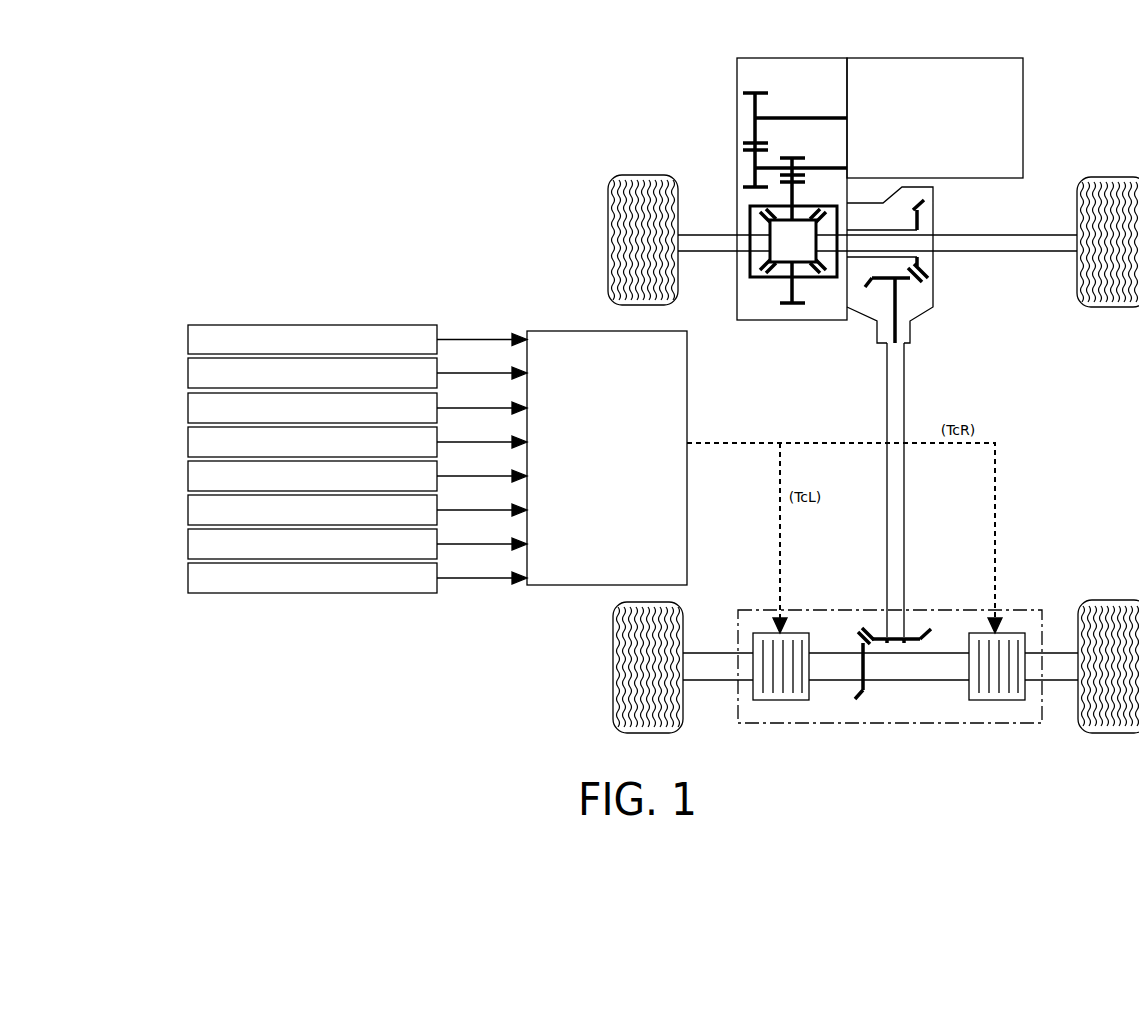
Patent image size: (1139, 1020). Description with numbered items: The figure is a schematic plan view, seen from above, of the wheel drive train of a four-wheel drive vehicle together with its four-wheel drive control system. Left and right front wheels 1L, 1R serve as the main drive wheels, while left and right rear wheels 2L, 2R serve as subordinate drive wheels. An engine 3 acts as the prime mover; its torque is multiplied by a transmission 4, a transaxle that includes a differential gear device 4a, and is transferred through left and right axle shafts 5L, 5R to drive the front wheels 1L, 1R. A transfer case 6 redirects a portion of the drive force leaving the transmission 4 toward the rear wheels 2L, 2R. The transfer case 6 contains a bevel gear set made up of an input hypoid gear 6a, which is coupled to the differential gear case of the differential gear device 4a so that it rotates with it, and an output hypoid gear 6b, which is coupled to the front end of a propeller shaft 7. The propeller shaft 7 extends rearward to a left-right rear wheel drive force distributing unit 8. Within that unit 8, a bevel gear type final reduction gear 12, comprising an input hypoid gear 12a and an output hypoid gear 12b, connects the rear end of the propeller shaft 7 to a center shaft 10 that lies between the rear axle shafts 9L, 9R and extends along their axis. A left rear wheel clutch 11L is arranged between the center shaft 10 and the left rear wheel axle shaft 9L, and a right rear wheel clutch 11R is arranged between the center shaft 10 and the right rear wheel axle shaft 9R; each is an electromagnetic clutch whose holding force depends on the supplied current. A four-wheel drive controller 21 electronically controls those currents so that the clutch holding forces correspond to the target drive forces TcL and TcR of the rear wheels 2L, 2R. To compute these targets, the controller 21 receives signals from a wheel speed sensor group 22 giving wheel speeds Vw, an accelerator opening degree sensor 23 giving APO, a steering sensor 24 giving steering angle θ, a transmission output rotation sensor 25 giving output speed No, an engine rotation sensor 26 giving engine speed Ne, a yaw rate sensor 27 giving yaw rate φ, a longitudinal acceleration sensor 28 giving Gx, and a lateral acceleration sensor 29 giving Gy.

The left front wheel 1L is at (640, 175).
The right front wheel 1R is at (1112, 177).
The left rear wheel 2L is at (613, 628).
The right rear wheel 2R is at (1112, 600).
The engine 3 is at (1023, 72).
The transmission 4 is at (770, 210).
The differential gear device 4a is at (758, 277).
The left axle shaft 5L is at (710, 235).
The right axle shaft 5R is at (1017, 235).
The transfer case 6 is at (919, 265).
The input hypoid gear 6a is at (925, 262).
The output hypoid gear 6b is at (905, 285).
The propeller shaft 7 is at (905, 390).
The left-right rear wheel drive force distributing unit 8 is at (953, 610).
The left rear wheel axle shaft 9L is at (712, 680).
The right rear wheel axle shaft 9R is at (1062, 680).
The center shaft 10 is at (935, 680).
The left rear wheel clutch 11L is at (778, 700).
The right rear wheel clutch 11R is at (1006, 700).
The final reduction gear 12 is at (864, 625).
The input hypoid gear 12a is at (867, 632).
The output hypoid gear 12b is at (857, 640).
The four-wheel drive controller 21 is at (549, 331).
The wheel speed sensor group 22 is at (188, 339).
The accelerator opening degree sensor 23 is at (188, 373).
The steering sensor 24 is at (188, 408).
The transmission output rotation sensor 25 is at (188, 442).
The engine rotation sensor 26 is at (188, 476).
The yaw rate sensor 27 is at (188, 510).
The longitudinal acceleration sensor 28 is at (188, 544).
The lateral acceleration sensor 29 is at (188, 578).